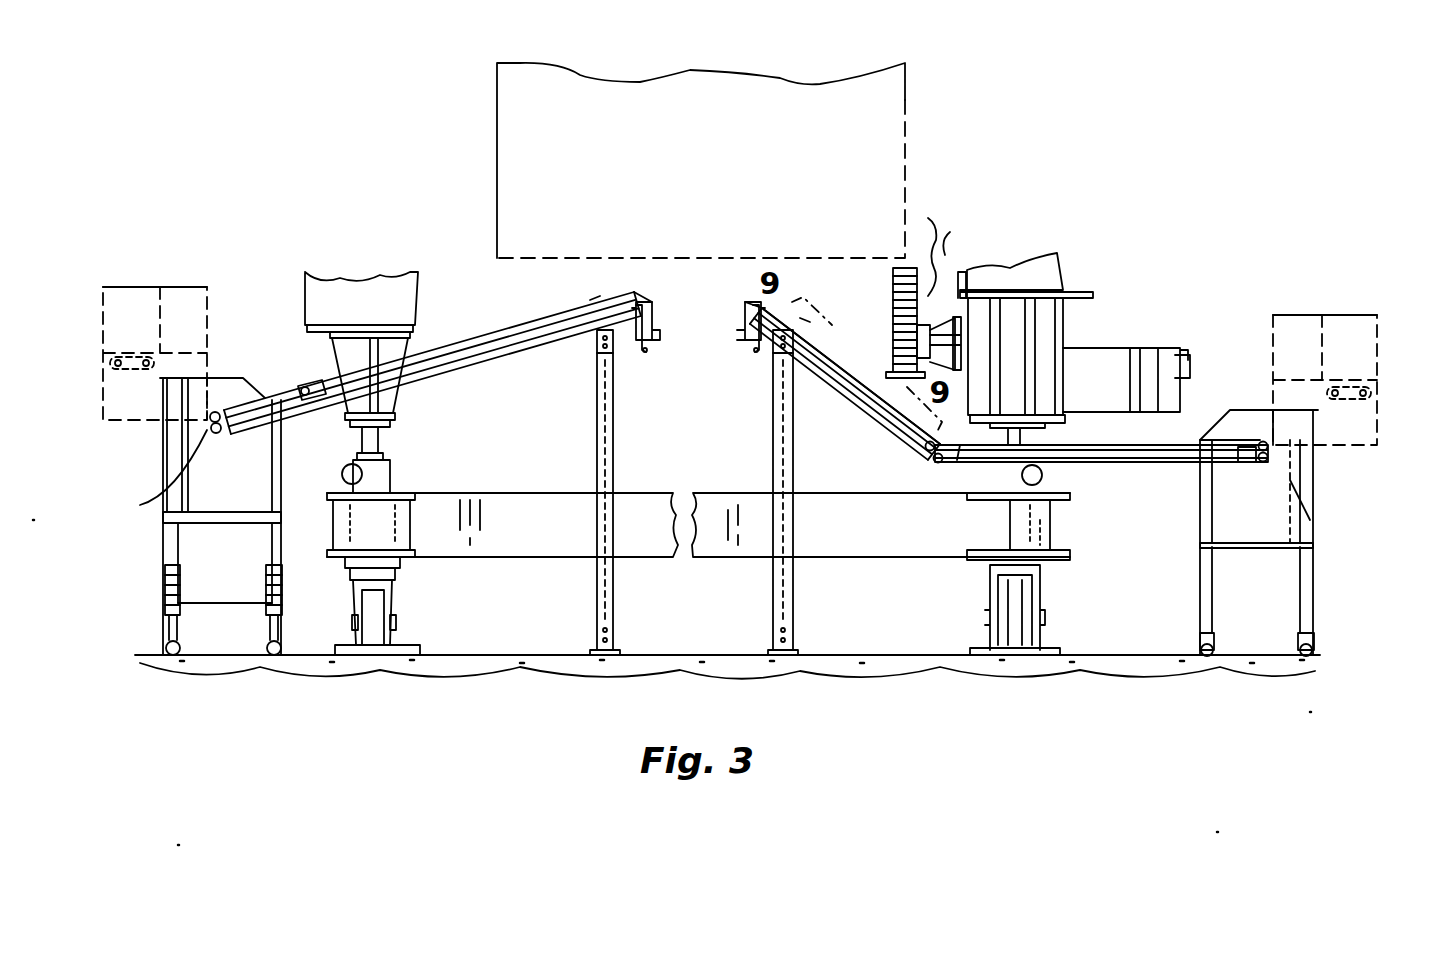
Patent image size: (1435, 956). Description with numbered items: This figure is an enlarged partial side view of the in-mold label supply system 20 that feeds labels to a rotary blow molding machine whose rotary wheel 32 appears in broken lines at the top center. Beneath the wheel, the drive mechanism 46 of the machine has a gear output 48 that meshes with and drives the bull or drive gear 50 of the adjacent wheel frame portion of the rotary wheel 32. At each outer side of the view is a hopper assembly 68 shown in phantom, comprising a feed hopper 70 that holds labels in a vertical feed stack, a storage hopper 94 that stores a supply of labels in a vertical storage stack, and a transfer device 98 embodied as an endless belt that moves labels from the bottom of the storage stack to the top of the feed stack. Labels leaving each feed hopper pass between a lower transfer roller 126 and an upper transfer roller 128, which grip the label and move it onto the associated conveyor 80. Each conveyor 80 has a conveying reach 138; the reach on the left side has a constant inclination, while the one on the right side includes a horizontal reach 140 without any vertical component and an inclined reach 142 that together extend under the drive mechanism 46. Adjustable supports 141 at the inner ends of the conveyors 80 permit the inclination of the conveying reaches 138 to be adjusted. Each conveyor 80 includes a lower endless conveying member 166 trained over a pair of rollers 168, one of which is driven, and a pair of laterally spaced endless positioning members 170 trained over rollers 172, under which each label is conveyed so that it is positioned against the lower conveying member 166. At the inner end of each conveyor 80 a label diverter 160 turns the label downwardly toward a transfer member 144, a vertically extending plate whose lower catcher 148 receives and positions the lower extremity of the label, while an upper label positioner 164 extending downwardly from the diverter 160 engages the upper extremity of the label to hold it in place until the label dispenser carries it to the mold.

The in-mold label supply system 20 is at (1170, 276).
The rotary wheel 32 is at (908, 98).
The drive mechanism 46 is at (1115, 270).
The gear output 48 is at (897, 282).
The bull or drive gear 50 is at (937, 250).
The hopper assembly 68 is at (145, 270).
The feed hopper 70 is at (157, 393).
The conveyor 80 is at (470, 418).
The storage hopper 94 is at (105, 313).
The transfer device 98 is at (133, 373).
The lower transfer roller 126 is at (150, 503).
The upper transfer roller 128 is at (222, 412).
The conveying reach 138 is at (503, 364).
The horizontal reach 140 is at (957, 462).
The adjustable supports 141 is at (598, 565).
The inclined reach 142 is at (870, 420).
The transfer member 144 is at (641, 352).
The lower catcher 148 is at (646, 352).
The label diverter 160 is at (745, 300).
The upper label positioner 164 is at (745, 330).
The lower endless conveying member 166 is at (487, 340).
The rollers 168 is at (770, 305).
The endless positioning members 170 is at (442, 342).
The rollers 172 is at (306, 385).